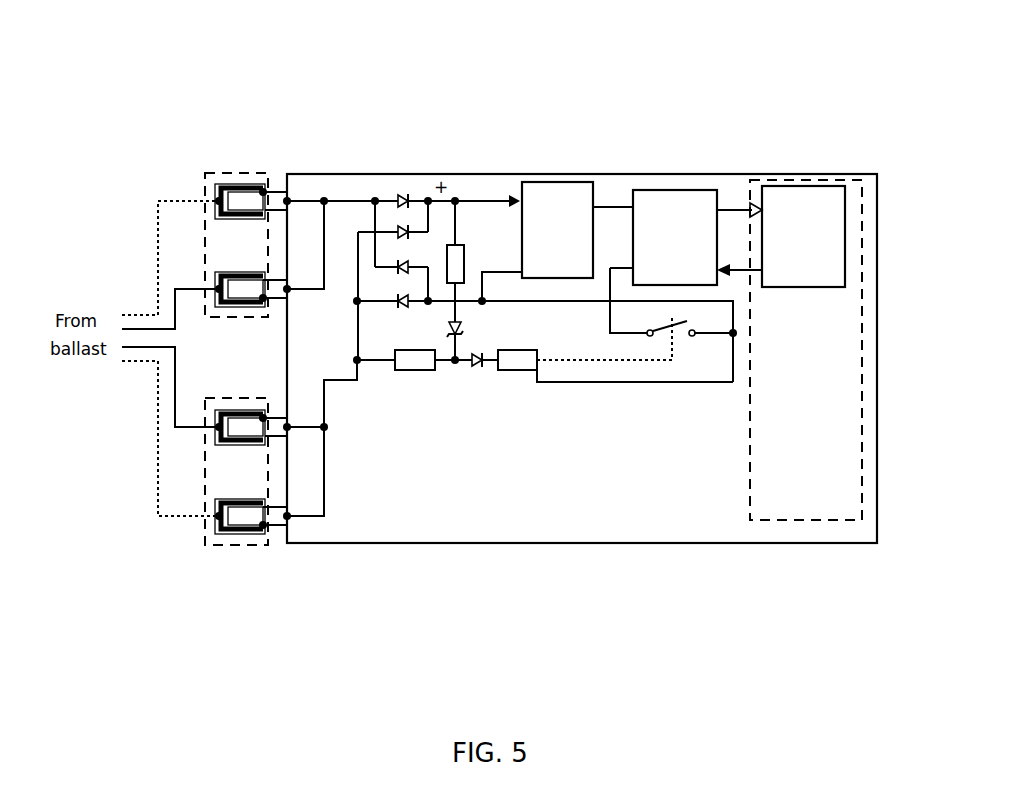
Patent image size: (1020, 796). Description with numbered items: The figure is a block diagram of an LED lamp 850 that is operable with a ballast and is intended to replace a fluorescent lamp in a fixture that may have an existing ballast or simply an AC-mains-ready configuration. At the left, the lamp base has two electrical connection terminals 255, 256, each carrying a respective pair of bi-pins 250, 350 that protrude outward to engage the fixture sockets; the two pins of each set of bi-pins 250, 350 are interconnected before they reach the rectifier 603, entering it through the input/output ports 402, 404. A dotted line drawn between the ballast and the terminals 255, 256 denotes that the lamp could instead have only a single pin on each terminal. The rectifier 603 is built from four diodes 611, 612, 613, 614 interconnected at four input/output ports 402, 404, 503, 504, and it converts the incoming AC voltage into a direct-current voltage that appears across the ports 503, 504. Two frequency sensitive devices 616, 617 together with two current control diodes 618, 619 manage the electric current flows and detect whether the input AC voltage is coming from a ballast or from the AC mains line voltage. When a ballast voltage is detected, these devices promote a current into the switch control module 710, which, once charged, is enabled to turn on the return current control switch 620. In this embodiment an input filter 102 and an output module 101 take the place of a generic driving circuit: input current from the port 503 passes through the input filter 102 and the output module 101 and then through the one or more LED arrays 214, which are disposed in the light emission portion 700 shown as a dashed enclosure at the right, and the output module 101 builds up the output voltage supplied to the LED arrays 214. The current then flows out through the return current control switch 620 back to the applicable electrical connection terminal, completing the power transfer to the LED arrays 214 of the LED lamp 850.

The electrical connection terminal 255 is at (207, 172).
The electrical connection terminal 256 is at (205, 550).
The bi-pins 250 is at (284, 193).
The bi-pins 350 is at (282, 525).
The input/output port 402 is at (380, 199).
The input/output port 404 is at (360, 366).
The rectifier 603 is at (362, 212).
The diode 611 is at (408, 196).
The diode 612 is at (416, 230).
The diode 613 is at (405, 309).
The diode 614 is at (405, 272).
The input/output port 503 is at (457, 198).
The input/output port 504 is at (487, 307).
The frequency sensitive device 616 is at (468, 250).
The frequency sensitive device 617 is at (420, 373).
The current control diode 618 is at (451, 345).
The current control diode 619 is at (478, 365).
The switch control module 710 is at (532, 373).
The return current control switch 620 is at (678, 337).
The input filter 102 is at (565, 182).
The output module 101 is at (683, 190).
The light emission portion 700 is at (804, 166).
The LED arrays 214 is at (808, 292).
The LED lamp 850 is at (522, 562).